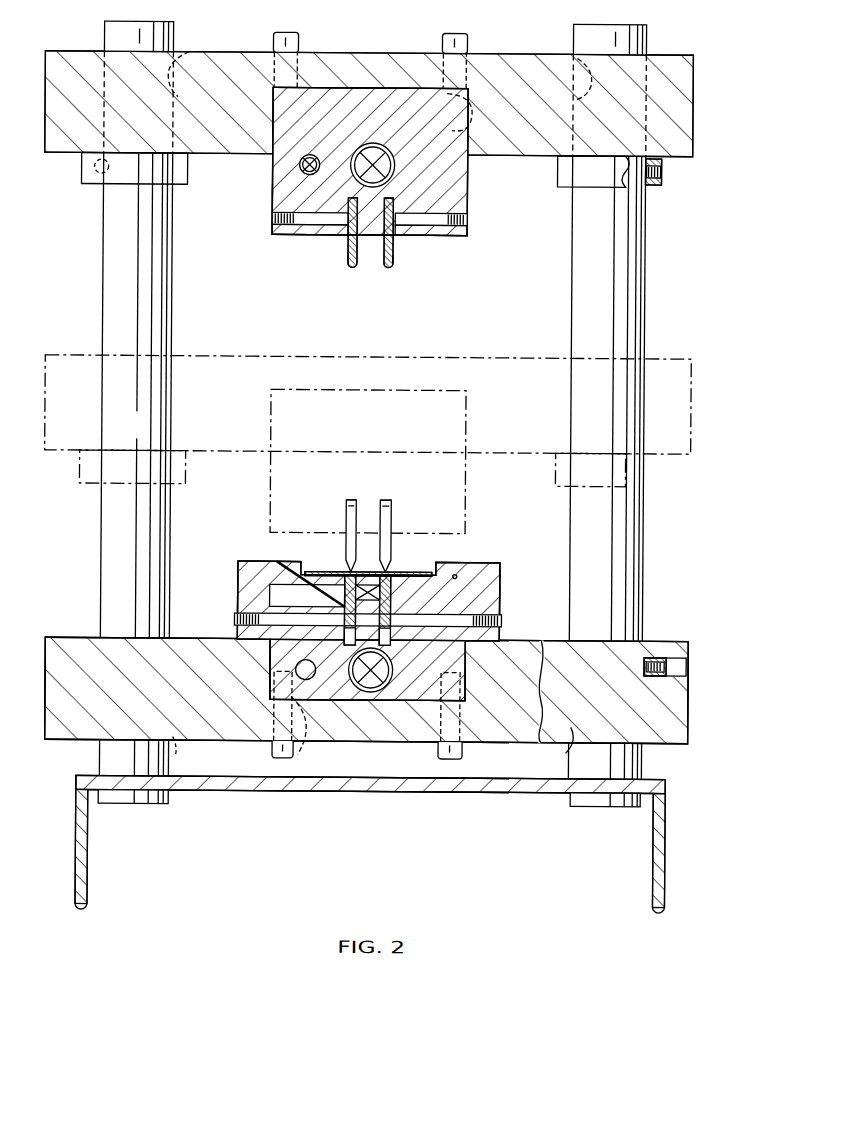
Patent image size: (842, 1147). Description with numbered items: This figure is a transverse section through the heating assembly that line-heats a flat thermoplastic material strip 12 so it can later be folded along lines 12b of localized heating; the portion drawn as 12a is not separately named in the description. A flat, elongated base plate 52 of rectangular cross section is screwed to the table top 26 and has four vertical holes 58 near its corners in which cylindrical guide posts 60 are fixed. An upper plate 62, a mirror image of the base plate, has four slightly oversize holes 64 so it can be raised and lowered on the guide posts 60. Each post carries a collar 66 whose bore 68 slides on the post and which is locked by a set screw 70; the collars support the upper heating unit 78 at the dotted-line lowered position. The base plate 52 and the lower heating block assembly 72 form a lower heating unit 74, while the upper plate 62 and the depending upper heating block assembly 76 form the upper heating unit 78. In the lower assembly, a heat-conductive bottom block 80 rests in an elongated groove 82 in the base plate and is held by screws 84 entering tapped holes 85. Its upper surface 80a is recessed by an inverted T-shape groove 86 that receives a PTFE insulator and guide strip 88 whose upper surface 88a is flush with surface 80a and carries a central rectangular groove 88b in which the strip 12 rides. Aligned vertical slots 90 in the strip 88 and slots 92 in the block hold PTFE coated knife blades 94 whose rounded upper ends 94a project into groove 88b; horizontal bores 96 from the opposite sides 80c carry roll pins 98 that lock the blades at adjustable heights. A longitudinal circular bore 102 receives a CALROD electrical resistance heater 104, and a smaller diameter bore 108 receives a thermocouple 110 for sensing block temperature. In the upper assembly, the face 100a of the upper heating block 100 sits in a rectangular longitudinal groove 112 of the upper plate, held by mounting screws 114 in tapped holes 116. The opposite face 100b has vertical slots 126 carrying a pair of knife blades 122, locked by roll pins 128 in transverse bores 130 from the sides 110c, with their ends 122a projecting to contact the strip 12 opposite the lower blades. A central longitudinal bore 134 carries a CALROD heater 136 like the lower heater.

The thermoplastic material strip 12 is at (393, 540).
The tube upper ends 12a is at (354, 520).
The lines of localized heating 12b is at (356, 592).
The table top 26 is at (660, 830).
The base plate 52 is at (678, 716).
The vertical holes 58 is at (568, 752).
The cylindrical guide posts 60 is at (112, 516).
The upper plate 62 is at (682, 114).
The holes 64 is at (176, 62).
The collar 66 is at (118, 178).
The bore 68 is at (93, 170).
The set screw 70 is at (662, 172).
The lower heating block assembly 72 is at (510, 592).
The lower heating unit 74 is at (516, 546).
The upper heating block assembly 76 is at (246, 188).
The upper heating unit 78 is at (474, 228).
The bottom block 80 is at (455, 645).
The upper surface 80a is at (262, 562).
The opposite sides 80c is at (239, 592).
The elongated groove 82 is at (468, 668).
The screws 84 is at (276, 752).
The tapped holes 85 is at (301, 756).
The inverted T-shape groove 86 is at (502, 582).
The PTFE insulator and guide strip 88 is at (282, 556).
The upper surface 88a is at (452, 566).
The central rectangular groove 88b is at (311, 572).
The vertical slots 90 is at (457, 574).
The vertical slots 92 is at (395, 670).
The knife blades 94 is at (390, 644).
The knife blade upper ends 94a is at (393, 574).
The horizontal bores 96 is at (496, 632).
The roll pins 98 is at (503, 618).
The upper heating block 100 is at (466, 200).
The face 100a is at (357, 90).
The opposite face 100b is at (292, 236).
The longitudinal circular bore 102 is at (378, 692).
The CALROD electrical resistance heater 104 is at (370, 686).
The smaller diameter bore 108 is at (298, 674).
The thermocouple 110 is at (298, 166).
The sides 110c is at (271, 200).
The rectangular longitudinal groove 112 is at (467, 136).
The mounting screws 114 is at (305, 22).
The tapped holes 116 is at (272, 100).
The knife blades 122 is at (381, 255).
The ends 122a is at (349, 262).
The vertical slots 126 is at (386, 206).
The roll pins 128 is at (272, 222).
The transverse bores 130 is at (316, 226).
The central longitudinal bore 134 is at (382, 172).
The CALROD heater 136 is at (393, 163).